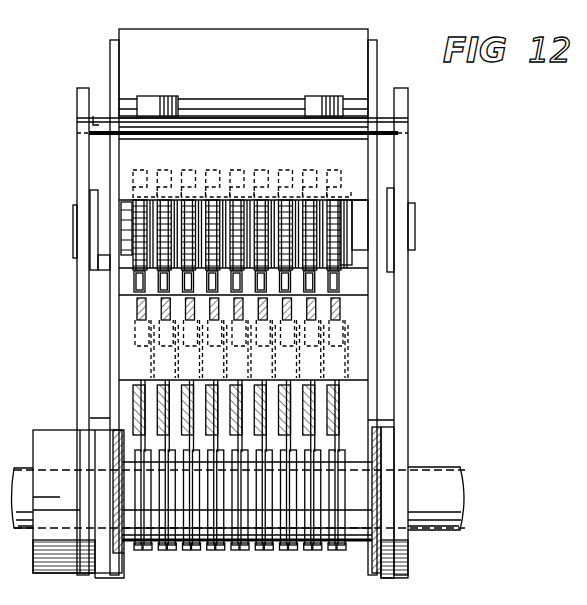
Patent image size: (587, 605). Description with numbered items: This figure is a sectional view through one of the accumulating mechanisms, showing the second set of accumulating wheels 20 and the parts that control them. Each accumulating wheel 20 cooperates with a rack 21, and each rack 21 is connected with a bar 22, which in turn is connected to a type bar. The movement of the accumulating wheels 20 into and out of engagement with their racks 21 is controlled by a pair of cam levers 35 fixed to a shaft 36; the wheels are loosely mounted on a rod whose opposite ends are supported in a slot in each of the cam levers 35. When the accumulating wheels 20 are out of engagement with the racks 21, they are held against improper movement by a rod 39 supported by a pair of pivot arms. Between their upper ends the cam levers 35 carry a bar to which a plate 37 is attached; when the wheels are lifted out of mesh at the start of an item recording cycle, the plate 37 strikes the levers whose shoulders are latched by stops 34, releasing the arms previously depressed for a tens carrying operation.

The accumulating wheel 20 is at (215, 169).
The rack 21 is at (145, 293).
The bar 22 is at (330, 400).
The stop 34 is at (140, 33).
The cam lever 35 is at (77, 98).
The shaft 36 is at (462, 491).
The plate 37 is at (248, 114).
The rod 39 is at (95, 118).